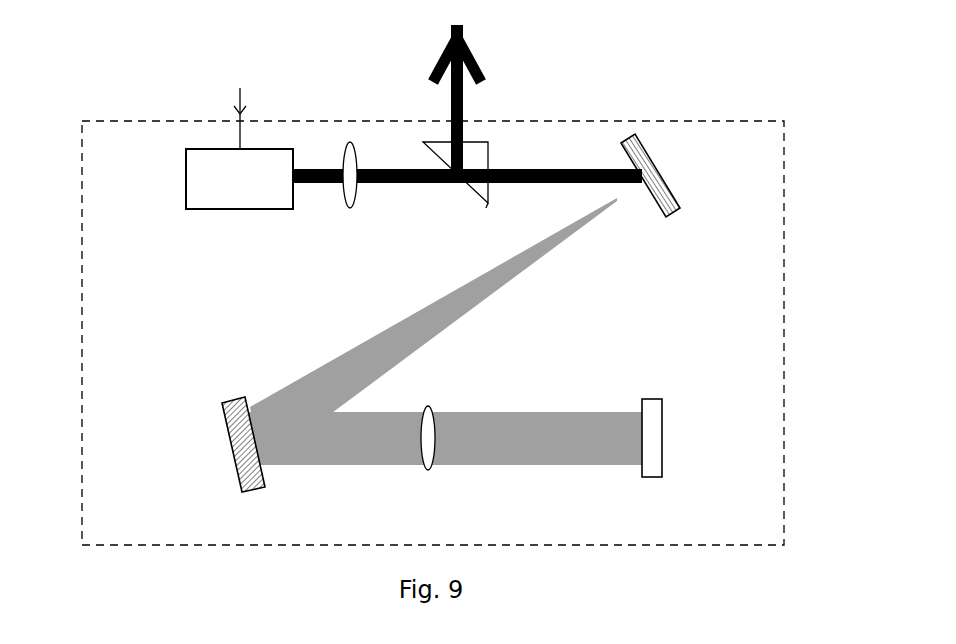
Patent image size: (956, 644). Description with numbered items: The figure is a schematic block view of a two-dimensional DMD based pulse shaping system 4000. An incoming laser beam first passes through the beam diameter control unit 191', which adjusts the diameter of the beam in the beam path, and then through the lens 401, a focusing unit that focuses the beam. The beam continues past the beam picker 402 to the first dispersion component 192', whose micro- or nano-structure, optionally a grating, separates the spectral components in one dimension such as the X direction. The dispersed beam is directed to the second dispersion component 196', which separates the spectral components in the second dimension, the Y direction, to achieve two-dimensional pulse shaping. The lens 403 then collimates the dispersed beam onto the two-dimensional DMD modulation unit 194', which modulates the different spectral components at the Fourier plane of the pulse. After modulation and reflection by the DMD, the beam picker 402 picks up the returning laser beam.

The DMD based pulse shaping system 4000 is at (701, 52).
The beam diameter control unit 191' is at (223, 174).
The lens 401 is at (348, 207).
The beam picker 402 is at (488, 203).
The first dispersion component 192' is at (684, 175).
The second dispersion component 196' is at (191, 442).
The lens 403 is at (432, 470).
The DMD 2D modulation unit 194' is at (674, 470).